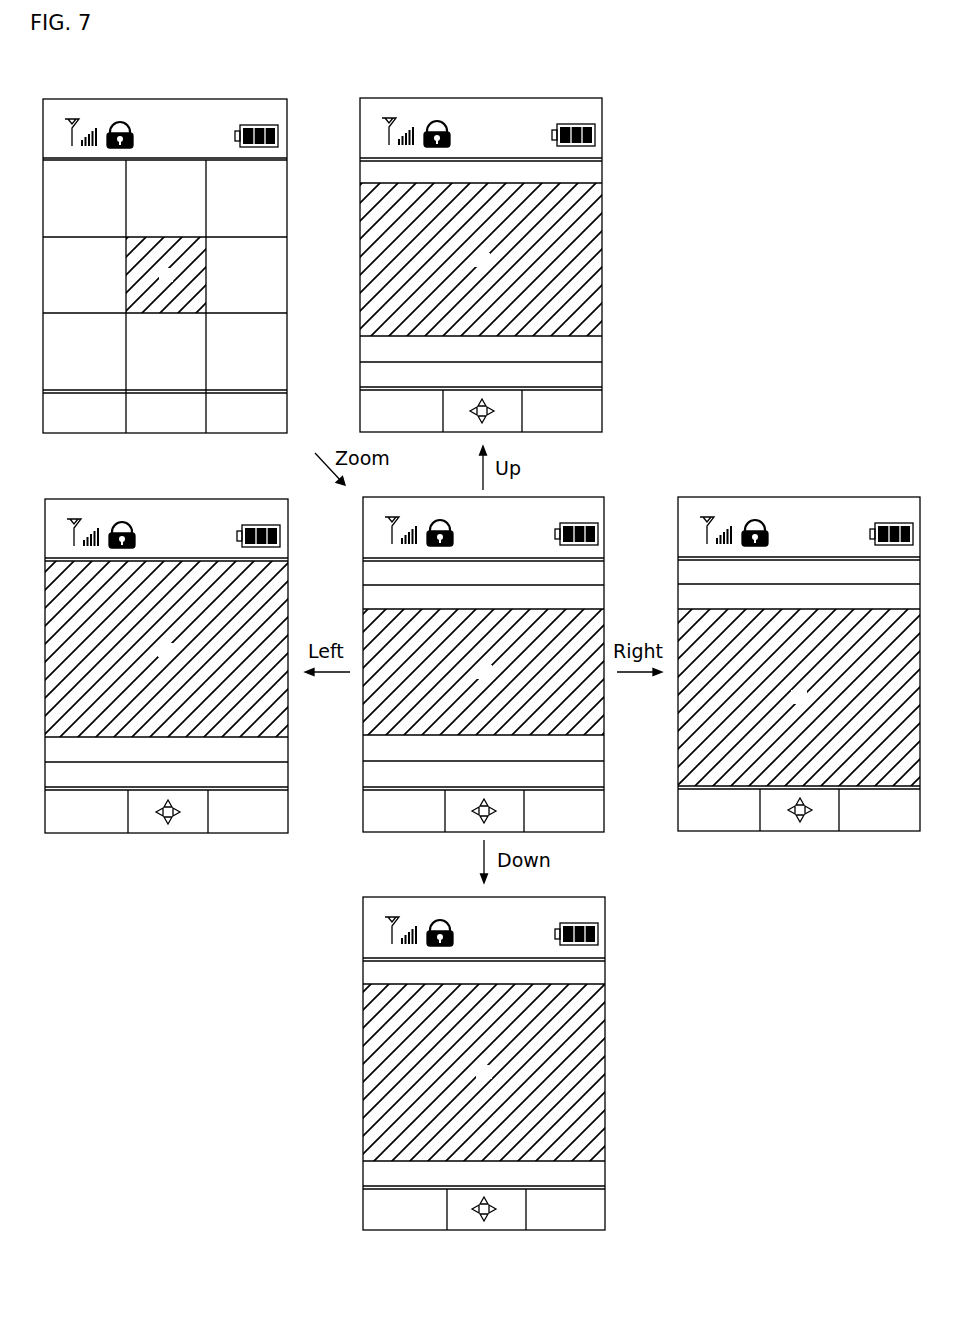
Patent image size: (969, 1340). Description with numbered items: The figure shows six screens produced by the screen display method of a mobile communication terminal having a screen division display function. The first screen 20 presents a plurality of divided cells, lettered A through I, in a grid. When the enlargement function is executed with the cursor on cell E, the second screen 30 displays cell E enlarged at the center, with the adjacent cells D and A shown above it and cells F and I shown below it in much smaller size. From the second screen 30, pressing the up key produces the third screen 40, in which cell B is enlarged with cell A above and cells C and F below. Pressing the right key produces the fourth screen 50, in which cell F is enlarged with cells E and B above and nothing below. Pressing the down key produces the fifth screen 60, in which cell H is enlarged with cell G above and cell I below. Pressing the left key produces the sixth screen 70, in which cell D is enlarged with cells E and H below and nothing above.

The first screen 20 is at (165, 99).
The second screen 30 is at (584, 497).
The third screen 40 is at (483, 98).
The fourth screen 50 is at (797, 497).
The fifth screen 60 is at (583, 897).
The sixth screen 70 is at (165, 499).